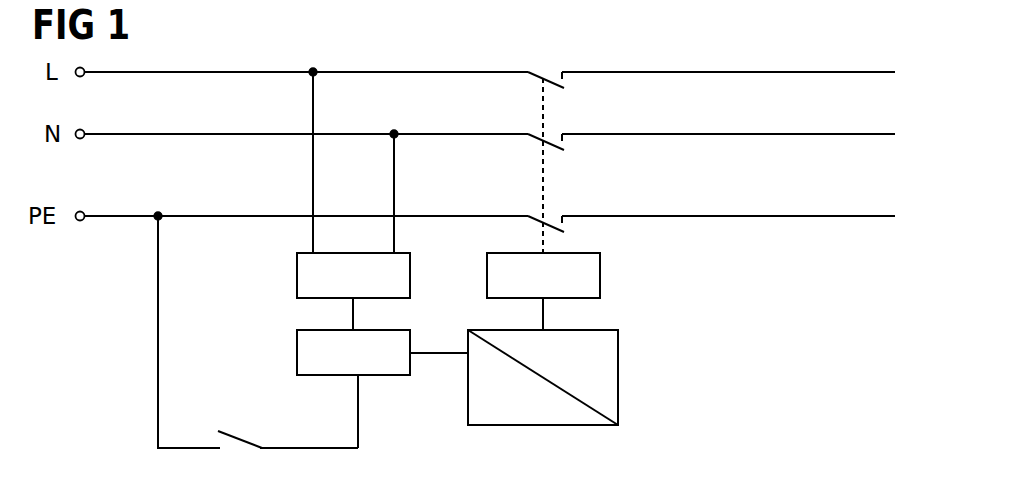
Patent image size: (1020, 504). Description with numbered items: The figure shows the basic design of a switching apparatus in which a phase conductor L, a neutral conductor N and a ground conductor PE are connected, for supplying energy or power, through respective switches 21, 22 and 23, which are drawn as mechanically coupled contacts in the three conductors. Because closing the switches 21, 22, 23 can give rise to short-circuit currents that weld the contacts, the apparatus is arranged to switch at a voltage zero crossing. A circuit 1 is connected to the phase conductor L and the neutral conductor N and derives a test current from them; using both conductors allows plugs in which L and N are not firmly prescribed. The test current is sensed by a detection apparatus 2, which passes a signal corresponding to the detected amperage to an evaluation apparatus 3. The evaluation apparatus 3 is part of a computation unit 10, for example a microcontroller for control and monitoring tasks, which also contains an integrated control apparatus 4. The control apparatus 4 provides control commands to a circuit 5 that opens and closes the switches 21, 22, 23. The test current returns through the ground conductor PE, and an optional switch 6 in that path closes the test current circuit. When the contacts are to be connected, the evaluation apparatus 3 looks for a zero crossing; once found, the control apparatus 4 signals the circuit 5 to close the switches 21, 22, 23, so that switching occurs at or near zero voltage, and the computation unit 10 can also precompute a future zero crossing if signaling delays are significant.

The circuit 1 is at (297, 276).
The detection apparatus 2 is at (297, 352).
The evaluation apparatus 3 is at (468, 410).
The control apparatus 4 is at (618, 378).
The circuit for opening and closing the switches 5 is at (601, 275).
The switch 6 is at (240, 432).
The computation unit 10 is at (620, 425).
The switch 21 is at (527, 78).
The switch 22 is at (528, 140).
The switch 23 is at (548, 222).